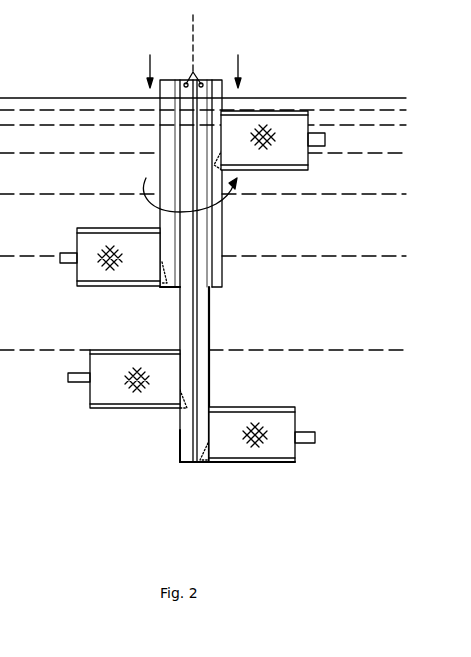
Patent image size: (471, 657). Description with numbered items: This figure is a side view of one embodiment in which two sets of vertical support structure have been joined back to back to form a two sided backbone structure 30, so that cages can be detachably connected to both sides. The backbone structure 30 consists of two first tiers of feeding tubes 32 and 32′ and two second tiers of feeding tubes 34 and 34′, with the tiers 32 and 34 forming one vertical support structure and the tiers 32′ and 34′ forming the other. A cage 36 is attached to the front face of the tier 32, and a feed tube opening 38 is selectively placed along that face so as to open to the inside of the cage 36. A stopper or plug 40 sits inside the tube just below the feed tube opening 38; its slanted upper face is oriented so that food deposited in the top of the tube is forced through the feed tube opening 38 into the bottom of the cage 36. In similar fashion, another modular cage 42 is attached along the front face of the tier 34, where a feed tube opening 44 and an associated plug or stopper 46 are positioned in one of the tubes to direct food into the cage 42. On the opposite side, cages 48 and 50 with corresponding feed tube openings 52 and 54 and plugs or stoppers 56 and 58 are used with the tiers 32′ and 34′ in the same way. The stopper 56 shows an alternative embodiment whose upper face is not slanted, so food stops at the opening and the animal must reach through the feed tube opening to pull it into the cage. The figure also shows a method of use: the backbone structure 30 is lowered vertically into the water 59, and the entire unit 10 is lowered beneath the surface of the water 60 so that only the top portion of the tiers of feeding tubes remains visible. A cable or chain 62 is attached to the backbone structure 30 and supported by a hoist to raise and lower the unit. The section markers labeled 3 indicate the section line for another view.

The section line of FIG. 3 is at (194, 62).
The entire unit 10 is at (153, 495).
The two sided backbone structure 30 is at (144, 178).
The first tier of feeding tubes 32 is at (223, 279).
The first tier of feeding tubes 32′ is at (160, 217).
The second tier of feeding tubes 34 is at (210, 377).
The second tier of feeding tubes 34′ is at (180, 443).
The cage 36 is at (290, 111).
The feed tube opening 38 is at (230, 156).
The stopper or plug 40 is at (238, 186).
The modular cage 42 is at (285, 463).
The feed tube opening 44 is at (210, 447).
The plug or stopper 46 is at (205, 463).
The cage 48 is at (80, 287).
The cage 50 is at (88, 408).
The feed tube opening 52 is at (158, 270).
The feed tube opening 54 is at (180, 397).
The plug or stopper 56 is at (167, 284).
The plug or stopper 58 is at (180, 410).
The water 59 is at (352, 316).
The surface of the water 60 is at (57, 98).
The cable or chain 62 is at (190, 27).